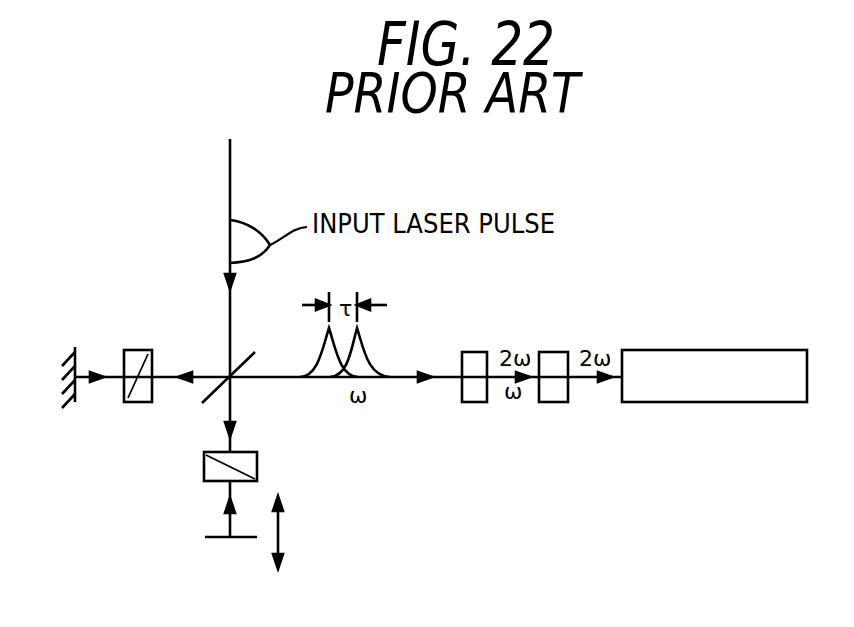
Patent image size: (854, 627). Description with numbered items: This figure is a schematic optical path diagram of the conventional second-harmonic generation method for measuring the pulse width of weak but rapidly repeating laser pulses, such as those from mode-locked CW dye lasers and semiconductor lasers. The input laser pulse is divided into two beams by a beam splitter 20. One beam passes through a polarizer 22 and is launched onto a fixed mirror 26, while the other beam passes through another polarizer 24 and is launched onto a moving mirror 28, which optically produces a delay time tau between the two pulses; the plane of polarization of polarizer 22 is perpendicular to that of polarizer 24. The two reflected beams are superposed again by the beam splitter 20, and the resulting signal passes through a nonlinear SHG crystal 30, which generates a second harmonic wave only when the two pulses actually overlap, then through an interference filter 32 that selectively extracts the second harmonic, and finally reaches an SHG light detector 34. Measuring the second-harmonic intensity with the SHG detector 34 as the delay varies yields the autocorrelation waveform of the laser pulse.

The beam splitter 20 is at (246, 351).
The polarizer 22 is at (145, 350).
The polarizer 24 is at (257, 470).
The fixed mirror 26 is at (78, 347).
The moving mirror 28 is at (213, 539).
The SHG crystal 30 is at (480, 402).
The interference filter 32 is at (557, 402).
The SHG light detector 34 is at (772, 350).